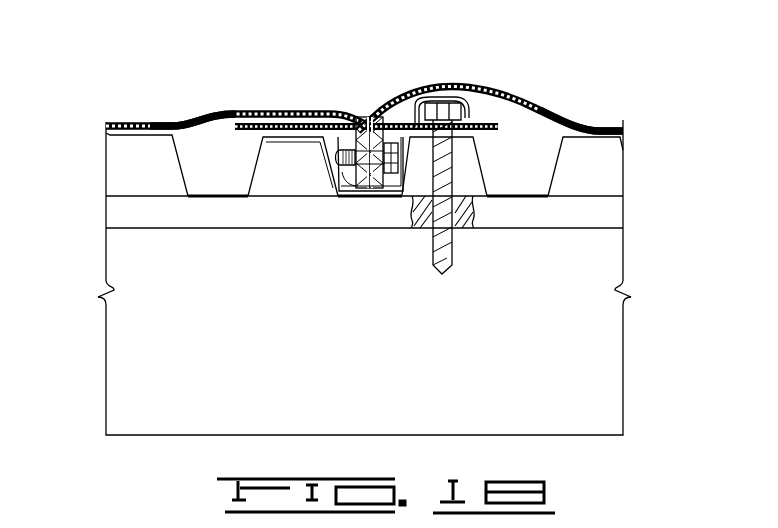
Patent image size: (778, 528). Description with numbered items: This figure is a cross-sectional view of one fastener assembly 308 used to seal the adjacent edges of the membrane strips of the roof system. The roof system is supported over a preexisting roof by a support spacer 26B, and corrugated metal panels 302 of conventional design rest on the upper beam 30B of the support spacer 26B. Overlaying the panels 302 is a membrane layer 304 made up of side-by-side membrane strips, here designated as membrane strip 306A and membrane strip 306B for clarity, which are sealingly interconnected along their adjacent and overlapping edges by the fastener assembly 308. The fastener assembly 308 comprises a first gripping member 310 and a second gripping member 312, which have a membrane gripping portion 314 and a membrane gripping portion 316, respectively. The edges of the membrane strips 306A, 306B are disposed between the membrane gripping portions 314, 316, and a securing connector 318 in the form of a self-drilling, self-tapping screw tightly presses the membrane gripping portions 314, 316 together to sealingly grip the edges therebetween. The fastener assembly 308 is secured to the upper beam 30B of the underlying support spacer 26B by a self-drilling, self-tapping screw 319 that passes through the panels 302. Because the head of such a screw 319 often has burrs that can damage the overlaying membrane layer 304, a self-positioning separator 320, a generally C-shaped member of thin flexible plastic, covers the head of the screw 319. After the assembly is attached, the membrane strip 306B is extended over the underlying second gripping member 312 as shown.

The support spacer 26B is at (118, 208).
The upper beam 30B is at (612, 218).
The corrugated metal panel 302 is at (186, 172).
The membrane layer 304 is at (131, 119).
The membrane strip 306A is at (190, 119).
The membrane strip 306B is at (598, 128).
The fastener assembly 308 is at (502, 116).
The first gripping member 310 is at (270, 121).
The second gripping member 312 is at (405, 114).
The membrane gripping portion 314 is at (343, 192).
The membrane gripping portion 316 is at (393, 196).
The securing connector 318 is at (351, 167).
The self-drilling, self-tapping screw 319 is at (452, 248).
The self-positioning separator 320 is at (466, 101).